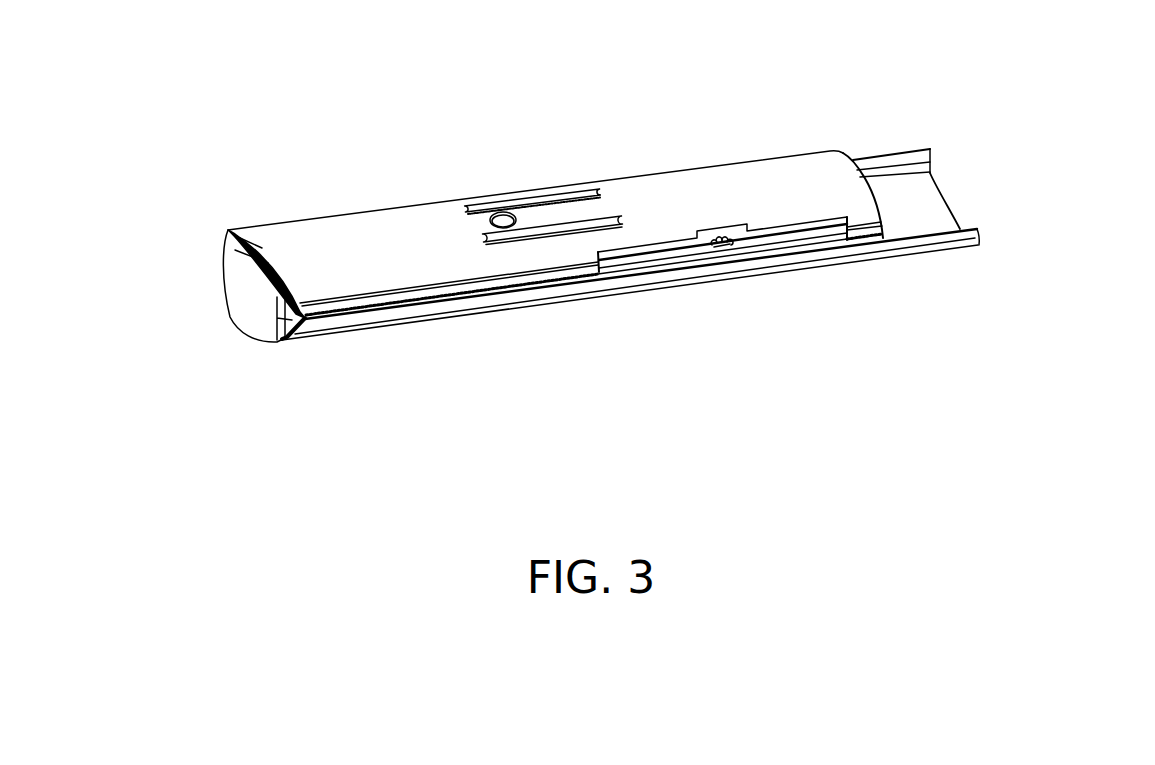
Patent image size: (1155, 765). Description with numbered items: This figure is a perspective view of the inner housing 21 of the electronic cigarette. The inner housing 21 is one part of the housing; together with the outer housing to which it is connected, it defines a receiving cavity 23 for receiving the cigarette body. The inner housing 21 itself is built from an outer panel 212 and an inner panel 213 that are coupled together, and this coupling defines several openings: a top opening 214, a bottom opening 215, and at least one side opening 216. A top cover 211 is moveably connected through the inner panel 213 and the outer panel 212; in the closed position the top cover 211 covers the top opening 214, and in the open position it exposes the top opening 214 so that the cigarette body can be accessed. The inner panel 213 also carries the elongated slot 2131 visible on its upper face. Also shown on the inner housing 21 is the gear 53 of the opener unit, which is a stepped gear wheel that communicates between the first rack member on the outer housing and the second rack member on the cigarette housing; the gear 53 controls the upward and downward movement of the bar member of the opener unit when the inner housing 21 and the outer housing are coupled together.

The inner housing 21 is at (927, 150).
The receiving cavity 23 is at (913, 187).
The top cover 211 is at (245, 302).
The outer panel 212 is at (933, 240).
The inner panel 213 is at (360, 233).
The slot 2131 is at (597, 188).
The top opening 214 is at (232, 232).
The bottom opening 215 is at (962, 214).
The side opening 216 is at (641, 262).
The gear 53 is at (726, 247).